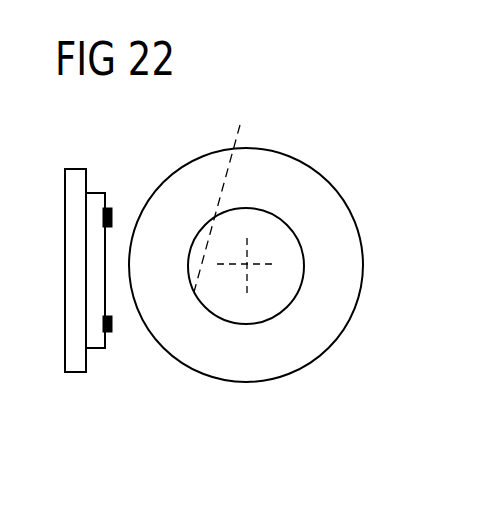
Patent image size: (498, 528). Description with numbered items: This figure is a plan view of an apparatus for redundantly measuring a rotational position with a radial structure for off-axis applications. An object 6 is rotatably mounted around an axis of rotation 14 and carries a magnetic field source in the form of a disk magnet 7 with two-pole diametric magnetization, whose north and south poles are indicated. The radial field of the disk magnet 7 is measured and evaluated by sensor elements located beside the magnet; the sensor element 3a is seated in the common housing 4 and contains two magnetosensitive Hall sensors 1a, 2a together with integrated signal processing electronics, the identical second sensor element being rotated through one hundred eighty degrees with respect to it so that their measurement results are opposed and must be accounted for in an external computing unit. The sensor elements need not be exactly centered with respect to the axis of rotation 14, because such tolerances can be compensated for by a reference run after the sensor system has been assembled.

The common housing 4 is at (76, 169).
The sensor element 3a is at (95, 350).
The Hall sensor 1a is at (112, 210).
The Hall sensor 2a is at (110, 333).
The object 6 is at (281, 230).
The disk magnet 7 is at (362, 265).
The axis of rotation 14 is at (248, 266).